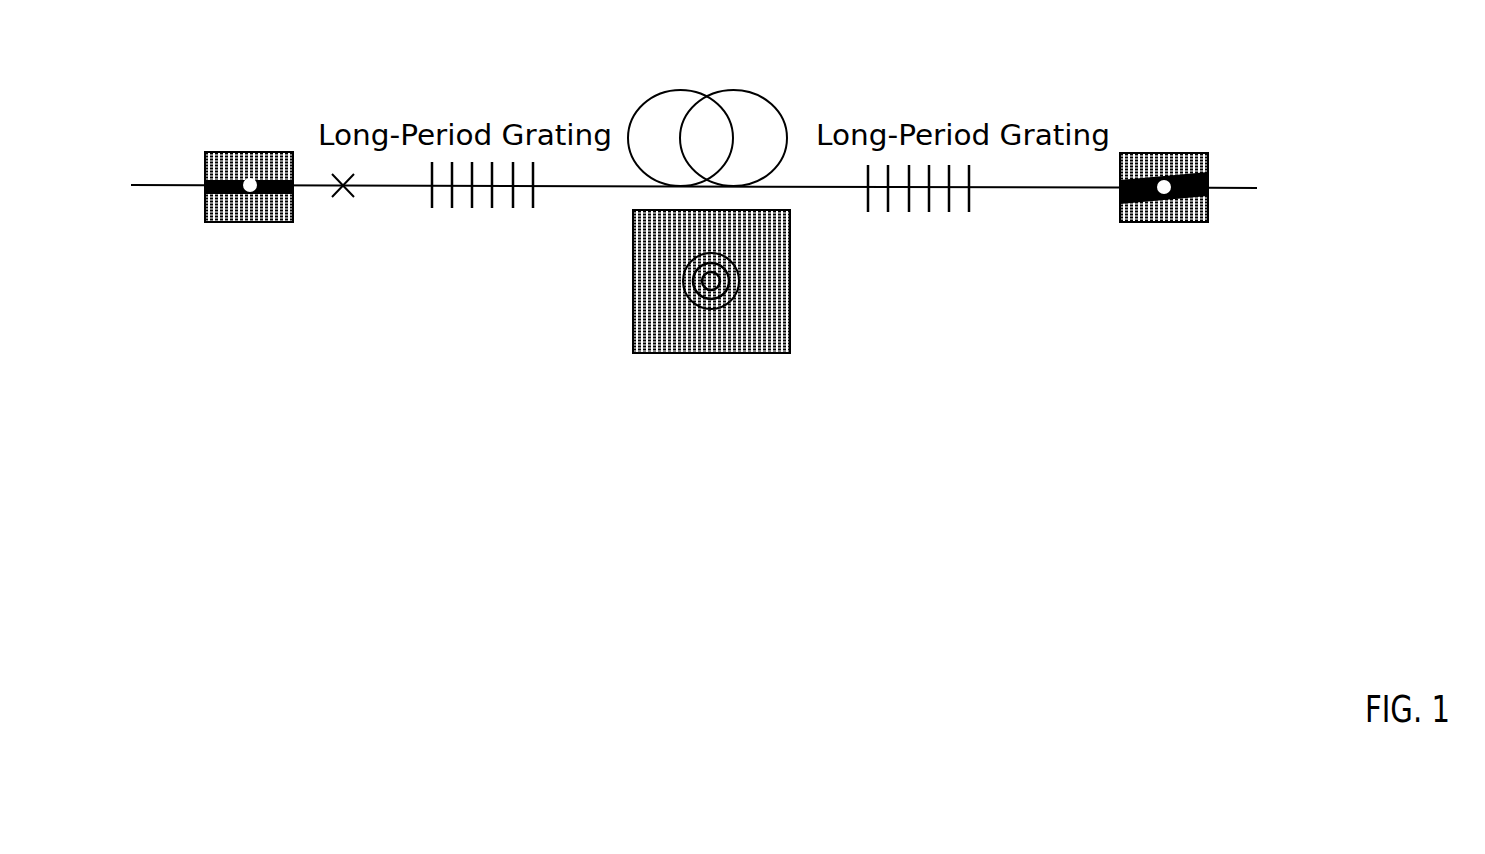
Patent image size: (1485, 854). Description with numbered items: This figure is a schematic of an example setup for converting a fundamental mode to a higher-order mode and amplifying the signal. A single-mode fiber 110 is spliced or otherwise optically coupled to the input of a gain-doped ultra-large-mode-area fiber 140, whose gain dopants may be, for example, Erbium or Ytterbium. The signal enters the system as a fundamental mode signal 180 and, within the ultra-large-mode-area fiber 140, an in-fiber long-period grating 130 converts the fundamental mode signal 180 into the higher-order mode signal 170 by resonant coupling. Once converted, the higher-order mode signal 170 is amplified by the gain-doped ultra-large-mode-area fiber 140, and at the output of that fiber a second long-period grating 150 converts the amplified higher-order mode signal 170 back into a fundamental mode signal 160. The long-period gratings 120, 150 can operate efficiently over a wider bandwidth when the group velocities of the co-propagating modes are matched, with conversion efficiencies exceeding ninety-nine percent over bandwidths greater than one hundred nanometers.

The single-mode fiber 110 is at (168, 186).
The long-period grating 120 is at (350, 197).
The in-fiber long-period grating 130 is at (513, 208).
The gain-doped ultra-large-mode-area fiber 140 is at (734, 90).
The long-period grating 150 is at (969, 212).
The fundamental mode signal 160 is at (1177, 222).
The higher-order mode signal 170 is at (722, 353).
The fundamental mode signal 180 is at (248, 152).